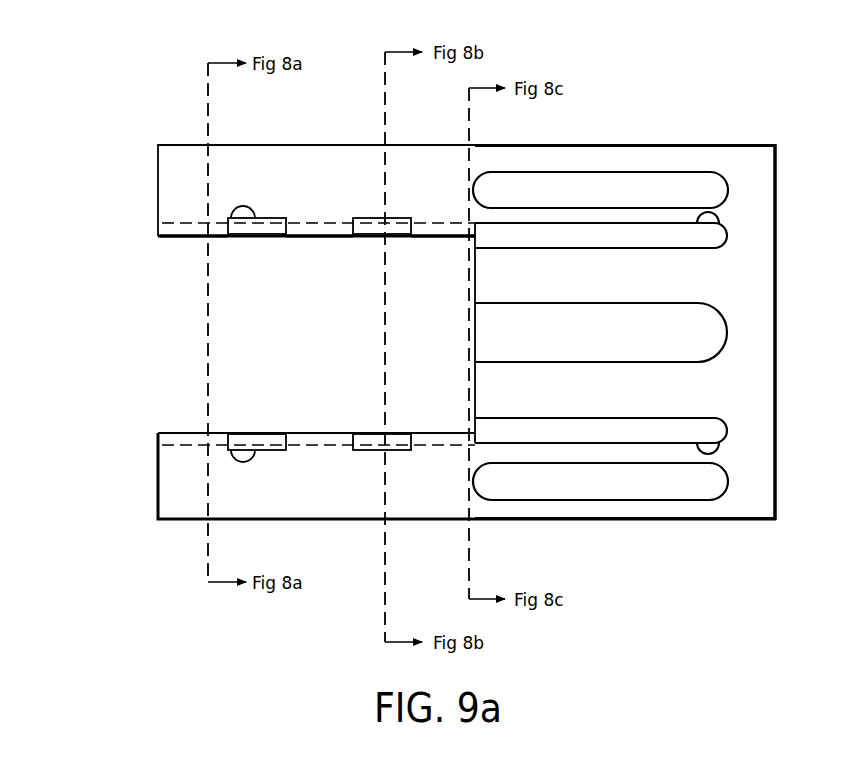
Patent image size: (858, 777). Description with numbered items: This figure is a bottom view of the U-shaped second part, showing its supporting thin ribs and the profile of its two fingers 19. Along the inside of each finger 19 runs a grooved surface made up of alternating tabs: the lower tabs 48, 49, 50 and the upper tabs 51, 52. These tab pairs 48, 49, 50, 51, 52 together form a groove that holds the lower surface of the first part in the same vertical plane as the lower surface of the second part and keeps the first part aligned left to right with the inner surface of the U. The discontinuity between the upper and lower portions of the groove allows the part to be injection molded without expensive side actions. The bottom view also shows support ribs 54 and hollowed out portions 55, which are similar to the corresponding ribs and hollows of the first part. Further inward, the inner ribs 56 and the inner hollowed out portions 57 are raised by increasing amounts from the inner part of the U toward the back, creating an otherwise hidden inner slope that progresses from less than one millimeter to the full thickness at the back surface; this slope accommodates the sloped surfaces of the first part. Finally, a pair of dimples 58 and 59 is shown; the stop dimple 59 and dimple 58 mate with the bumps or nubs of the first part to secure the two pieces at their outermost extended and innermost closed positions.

The fingers 19 is at (178, 200).
The lower tab 48 is at (183, 240).
The lower tab 49 is at (317, 240).
The lower tab 50 is at (435, 240).
The upper tab 51 is at (247, 240).
The upper tab 52 is at (378, 240).
The support ribs 54 is at (568, 215).
The hollowed out portions 55 is at (663, 185).
The inner ribs 56 is at (703, 405).
The hollowed out portions 57 is at (708, 238).
The dimple 58 is at (717, 215).
The stop dimple 59 is at (244, 207).